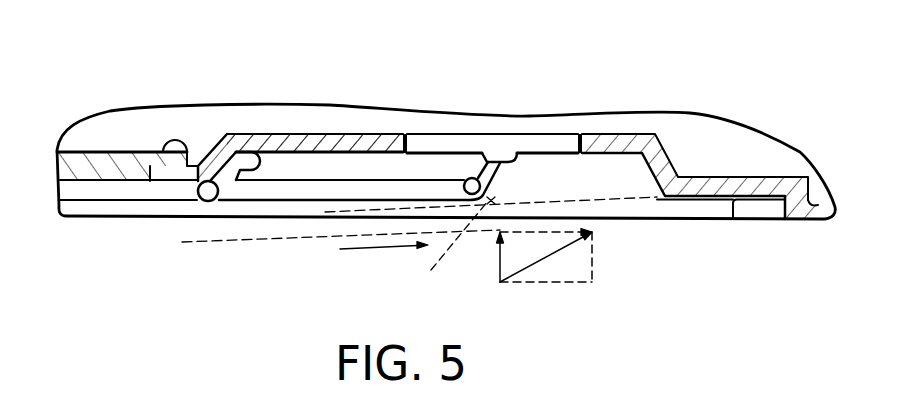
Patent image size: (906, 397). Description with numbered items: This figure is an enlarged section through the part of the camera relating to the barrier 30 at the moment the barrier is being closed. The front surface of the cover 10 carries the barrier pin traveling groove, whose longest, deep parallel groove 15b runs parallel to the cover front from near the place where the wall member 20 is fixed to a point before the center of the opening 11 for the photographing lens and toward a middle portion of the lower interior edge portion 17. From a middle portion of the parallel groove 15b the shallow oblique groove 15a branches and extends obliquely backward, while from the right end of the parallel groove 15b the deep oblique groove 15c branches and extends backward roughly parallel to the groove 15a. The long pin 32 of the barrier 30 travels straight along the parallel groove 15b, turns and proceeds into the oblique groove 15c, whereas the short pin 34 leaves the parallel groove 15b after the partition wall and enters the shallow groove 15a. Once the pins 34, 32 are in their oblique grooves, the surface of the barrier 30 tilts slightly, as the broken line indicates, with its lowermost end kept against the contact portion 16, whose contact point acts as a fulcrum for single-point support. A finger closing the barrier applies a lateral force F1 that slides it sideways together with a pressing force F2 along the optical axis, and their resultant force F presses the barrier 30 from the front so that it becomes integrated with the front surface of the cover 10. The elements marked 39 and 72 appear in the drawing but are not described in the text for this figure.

The cover 10 is at (699, 108).
The opening for the photographing lens 11 is at (557, 147).
The oblique groove (shallow groove) 15a is at (245, 156).
The parallel groove (deep groove) 15b is at (306, 190).
The oblique groove (deep groove) 15c is at (492, 160).
The contact portion 16 is at (763, 201).
The lower interior edge portion 17 is at (414, 242).
The wall member 20 is at (87, 157).
The barrier 30 is at (237, 250).
The barrier pin (long pin) 32 is at (471, 178).
The barrier pin (short pin) 34 is at (194, 207).
The guide portion 39 is at (710, 199).
The projection 72 is at (167, 141).
The resultant force F is at (546, 257).
The lateral force F1 is at (546, 247).
The pressing force F2 is at (483, 257).